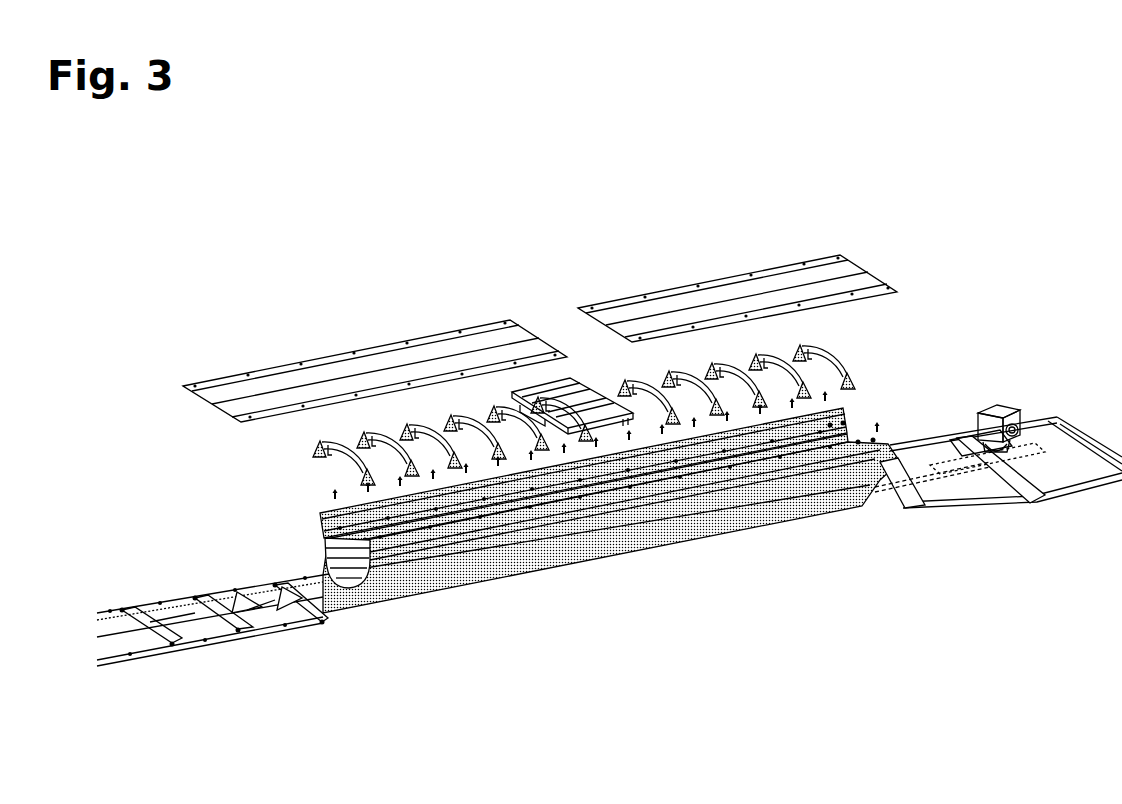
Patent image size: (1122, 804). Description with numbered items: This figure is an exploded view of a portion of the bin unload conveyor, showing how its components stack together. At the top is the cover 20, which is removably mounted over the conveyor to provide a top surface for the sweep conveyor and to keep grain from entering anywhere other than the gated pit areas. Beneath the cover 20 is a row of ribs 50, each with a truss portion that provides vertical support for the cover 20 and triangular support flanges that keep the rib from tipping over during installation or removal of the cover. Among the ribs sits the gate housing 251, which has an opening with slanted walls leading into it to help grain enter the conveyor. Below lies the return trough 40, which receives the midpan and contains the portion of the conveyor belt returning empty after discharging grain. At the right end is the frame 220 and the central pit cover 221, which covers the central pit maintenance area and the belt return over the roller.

The cover 20 is at (860, 267).
The rib 50 is at (823, 341).
The gate housing 251 is at (591, 389).
The return trough 40 is at (650, 552).
The frame 220 is at (903, 425).
The central pit cover 221 is at (1067, 471).